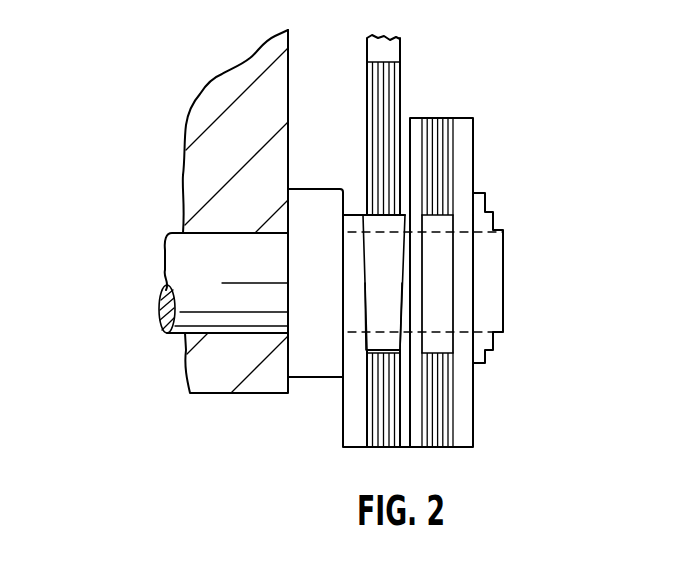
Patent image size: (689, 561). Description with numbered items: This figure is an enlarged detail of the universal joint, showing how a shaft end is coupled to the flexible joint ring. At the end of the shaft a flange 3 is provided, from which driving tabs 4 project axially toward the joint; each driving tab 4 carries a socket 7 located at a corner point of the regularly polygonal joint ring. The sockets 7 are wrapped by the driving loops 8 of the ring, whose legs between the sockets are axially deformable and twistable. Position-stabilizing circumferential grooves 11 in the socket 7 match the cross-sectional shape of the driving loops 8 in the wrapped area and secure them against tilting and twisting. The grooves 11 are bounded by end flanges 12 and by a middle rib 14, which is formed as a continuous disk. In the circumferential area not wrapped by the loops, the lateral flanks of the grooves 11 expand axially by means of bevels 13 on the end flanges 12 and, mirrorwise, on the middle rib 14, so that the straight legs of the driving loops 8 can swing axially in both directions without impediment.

The flange 3 is at (205, 190).
The driving tab 4 is at (185, 272).
The socket 7 is at (485, 363).
The driving loop 8 is at (437, 124).
The position-stabilizing circumferential groove 11 is at (437, 300).
The end flange 12 is at (473, 186).
The bevel 13 is at (366, 285).
The middle rib 14 is at (405, 312).